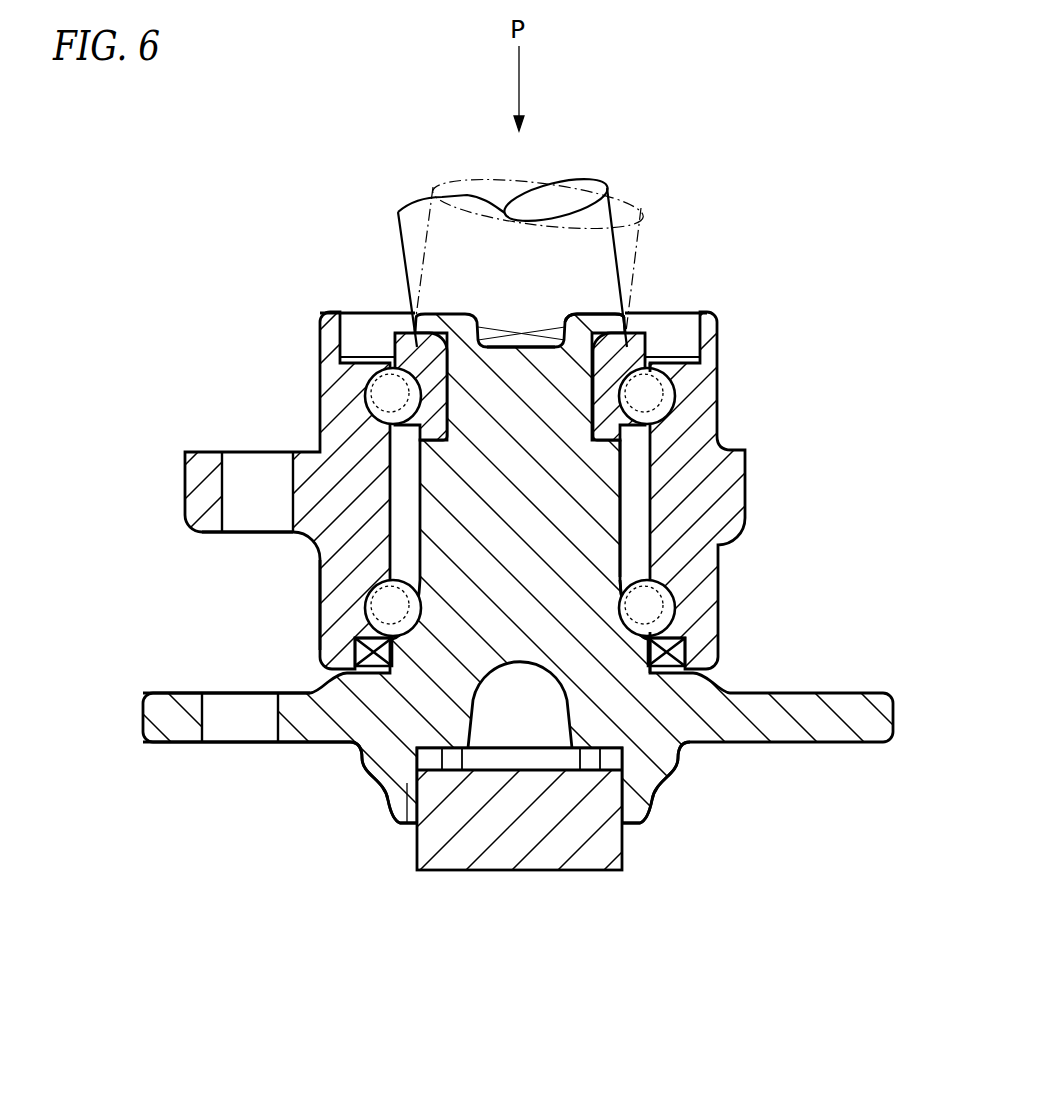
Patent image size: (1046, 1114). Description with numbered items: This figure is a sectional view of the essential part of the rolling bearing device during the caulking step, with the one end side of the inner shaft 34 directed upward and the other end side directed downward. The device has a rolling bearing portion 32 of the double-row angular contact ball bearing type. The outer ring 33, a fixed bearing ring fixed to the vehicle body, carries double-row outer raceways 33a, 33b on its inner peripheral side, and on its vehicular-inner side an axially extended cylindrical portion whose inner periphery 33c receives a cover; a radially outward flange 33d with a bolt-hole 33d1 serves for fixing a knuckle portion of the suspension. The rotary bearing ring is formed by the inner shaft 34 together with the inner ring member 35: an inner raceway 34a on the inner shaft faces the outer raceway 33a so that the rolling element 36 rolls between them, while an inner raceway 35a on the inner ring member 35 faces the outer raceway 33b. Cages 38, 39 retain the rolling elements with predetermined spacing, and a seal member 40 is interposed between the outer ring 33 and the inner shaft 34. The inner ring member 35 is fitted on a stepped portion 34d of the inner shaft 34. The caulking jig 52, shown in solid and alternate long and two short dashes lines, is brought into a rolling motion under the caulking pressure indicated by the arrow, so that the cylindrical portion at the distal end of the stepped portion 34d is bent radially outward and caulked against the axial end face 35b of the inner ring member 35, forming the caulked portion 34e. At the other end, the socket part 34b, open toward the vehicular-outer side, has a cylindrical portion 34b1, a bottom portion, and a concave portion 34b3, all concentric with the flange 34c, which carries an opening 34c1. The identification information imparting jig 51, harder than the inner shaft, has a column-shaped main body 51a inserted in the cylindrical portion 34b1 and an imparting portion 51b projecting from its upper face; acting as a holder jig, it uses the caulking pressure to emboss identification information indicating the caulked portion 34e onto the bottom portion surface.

The rolling bearing portion 32 is at (318, 590).
The outer ring 33 is at (340, 398).
The outer raceway 33a is at (662, 603).
The outer raceway 33b is at (663, 401).
The inner periphery 33c is at (350, 312).
The flange 33d is at (215, 482).
The bolt-hole 33d1 is at (232, 510).
The inner shaft 34 is at (452, 488).
The inner raceway 34a is at (643, 640).
The socket part 34b is at (386, 825).
The cylindrical portion 34b1 is at (407, 823).
The concave portion 34b3 is at (515, 665).
The flange 34c is at (155, 718).
The flange hole 34c1 is at (208, 742).
The stepped portion 34d is at (643, 323).
The caulked portion 34e is at (583, 332).
The inner ring member 35 is at (407, 348).
The inner raceway 35a is at (667, 382).
The axial end face 35b is at (625, 330).
The rolling element 36 is at (368, 603).
The cage 38 is at (652, 560).
The cage 39 is at (652, 463).
The seal member 40 is at (686, 652).
The identification information imparting jig 51 is at (521, 862).
The main body 51a is at (494, 845).
The imparting portion 51b is at (583, 757).
The caulking jig 52 is at (556, 182).